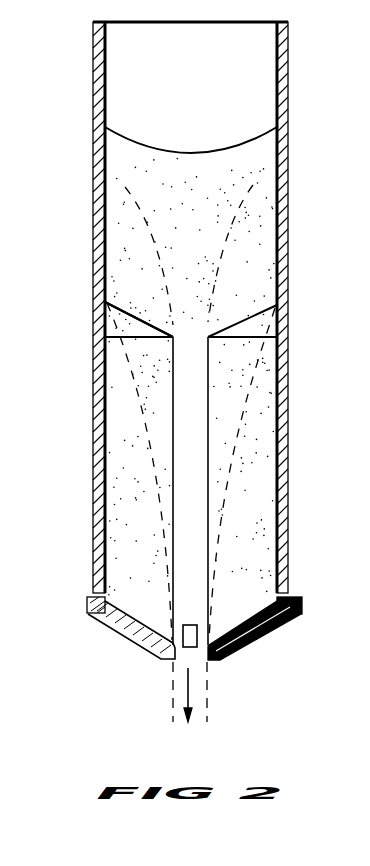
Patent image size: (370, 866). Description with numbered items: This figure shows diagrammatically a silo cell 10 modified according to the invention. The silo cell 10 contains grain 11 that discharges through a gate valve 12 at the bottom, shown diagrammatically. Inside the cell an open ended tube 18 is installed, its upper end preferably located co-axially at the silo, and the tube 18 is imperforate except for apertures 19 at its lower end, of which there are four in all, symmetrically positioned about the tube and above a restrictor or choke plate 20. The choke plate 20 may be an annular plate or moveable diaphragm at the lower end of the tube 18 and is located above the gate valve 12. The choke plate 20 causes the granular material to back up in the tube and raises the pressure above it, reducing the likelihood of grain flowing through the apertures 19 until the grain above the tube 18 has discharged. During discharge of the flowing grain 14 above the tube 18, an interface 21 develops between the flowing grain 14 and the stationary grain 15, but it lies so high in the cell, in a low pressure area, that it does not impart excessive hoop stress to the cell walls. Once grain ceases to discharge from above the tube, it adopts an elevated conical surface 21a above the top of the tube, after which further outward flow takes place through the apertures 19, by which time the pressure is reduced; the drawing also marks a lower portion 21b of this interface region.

The silo cell 10 is at (93, 163).
The grain 11 is at (55, 271).
The gate valve 12 is at (165, 660).
The flowing grain 14 is at (195, 209).
The stationary grain 15 is at (149, 521).
The open ended tube 18 is at (211, 413).
The apertures 19 is at (193, 631).
The choke plate 20 is at (206, 657).
The interface 21 is at (128, 188).
The elevated conical surface 21a is at (120, 311).
The baffle horizontal portion 21b is at (145, 412).